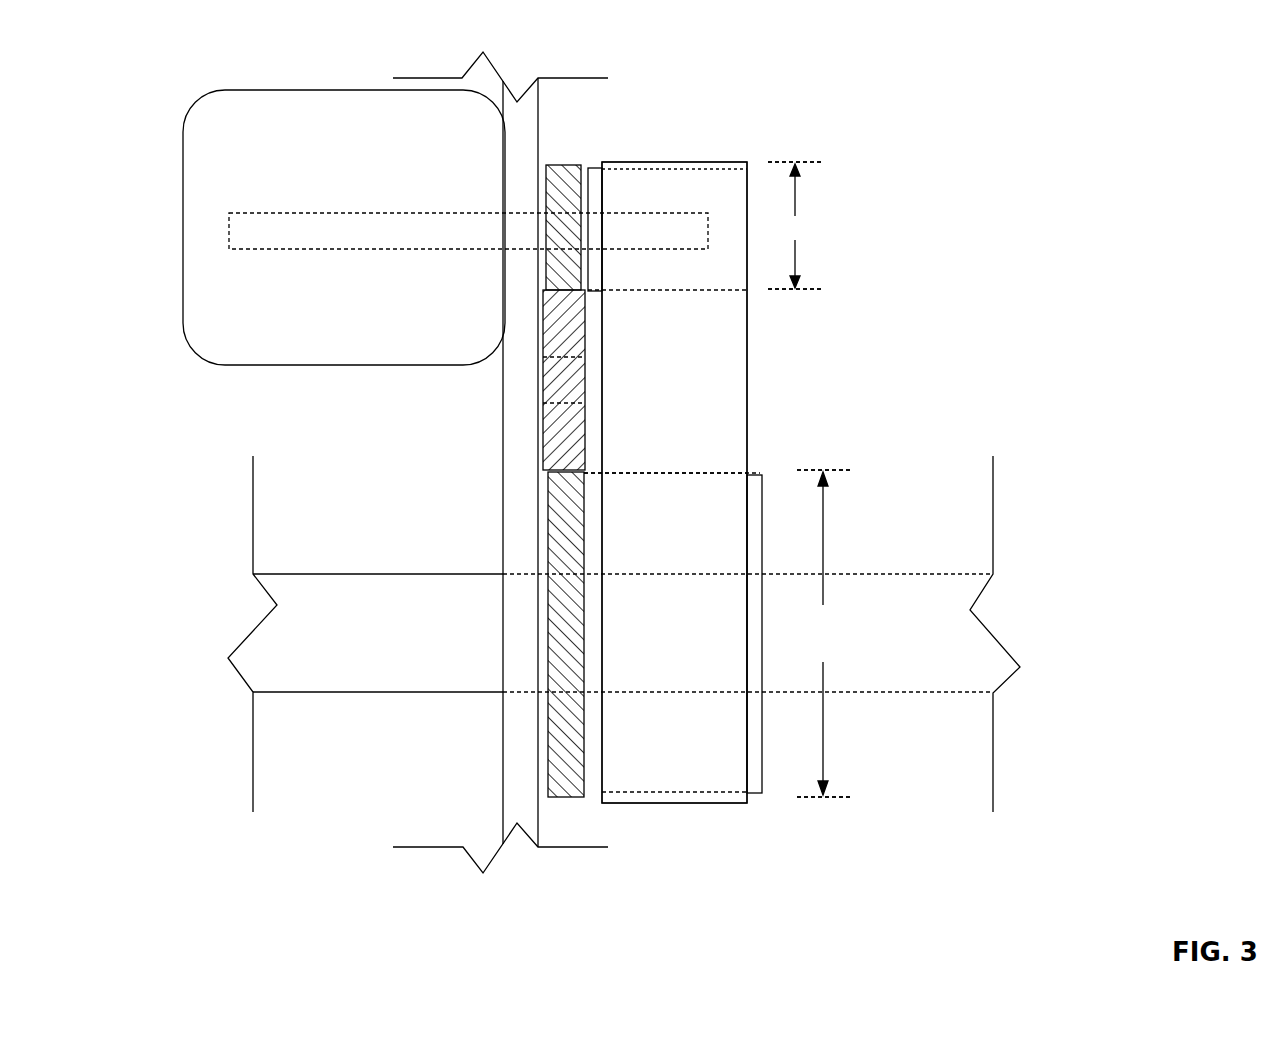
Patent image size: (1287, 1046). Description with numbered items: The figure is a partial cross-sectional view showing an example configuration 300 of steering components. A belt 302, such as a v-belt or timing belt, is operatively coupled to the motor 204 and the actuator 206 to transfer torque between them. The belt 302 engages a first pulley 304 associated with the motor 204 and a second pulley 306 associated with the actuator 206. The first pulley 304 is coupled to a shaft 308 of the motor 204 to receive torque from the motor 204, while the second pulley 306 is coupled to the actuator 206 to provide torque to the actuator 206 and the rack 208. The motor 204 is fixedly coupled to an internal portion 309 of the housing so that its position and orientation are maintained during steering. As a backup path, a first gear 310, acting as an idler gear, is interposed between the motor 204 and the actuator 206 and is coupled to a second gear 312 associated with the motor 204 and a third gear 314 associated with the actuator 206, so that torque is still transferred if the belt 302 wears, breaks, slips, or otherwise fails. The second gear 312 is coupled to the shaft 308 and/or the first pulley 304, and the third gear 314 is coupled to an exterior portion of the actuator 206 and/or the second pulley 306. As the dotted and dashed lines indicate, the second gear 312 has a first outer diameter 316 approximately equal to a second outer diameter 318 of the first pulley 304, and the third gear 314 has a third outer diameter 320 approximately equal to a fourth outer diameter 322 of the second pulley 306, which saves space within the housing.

The motor 204 is at (178, 106).
The actuator 206 is at (771, 808).
The rack 208 is at (624, 634).
The configuration 300 is at (914, 61).
The belt 302 is at (665, 482).
The first pulley 304 is at (717, 292).
The second pulley 306 is at (713, 473).
The shaft 308 is at (630, 213).
The portion 309 is at (503, 745).
The first gear 310 is at (587, 315).
The second gear 312 is at (550, 163).
The third gear 314 is at (572, 797).
The first outer diameter 316 is at (843, 133).
The second outer diameter 318 is at (808, 162).
The third outer diameter 320 is at (848, 797).
The fourth outer diameter 322 is at (848, 797).